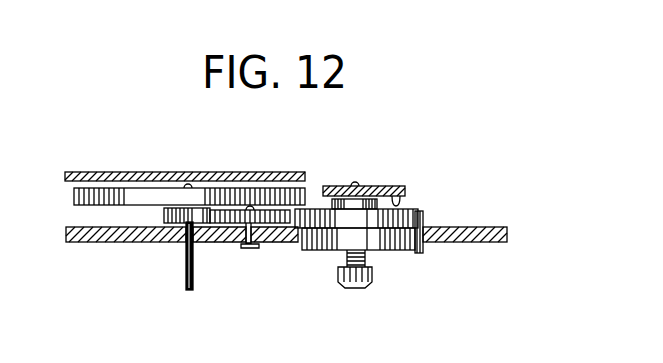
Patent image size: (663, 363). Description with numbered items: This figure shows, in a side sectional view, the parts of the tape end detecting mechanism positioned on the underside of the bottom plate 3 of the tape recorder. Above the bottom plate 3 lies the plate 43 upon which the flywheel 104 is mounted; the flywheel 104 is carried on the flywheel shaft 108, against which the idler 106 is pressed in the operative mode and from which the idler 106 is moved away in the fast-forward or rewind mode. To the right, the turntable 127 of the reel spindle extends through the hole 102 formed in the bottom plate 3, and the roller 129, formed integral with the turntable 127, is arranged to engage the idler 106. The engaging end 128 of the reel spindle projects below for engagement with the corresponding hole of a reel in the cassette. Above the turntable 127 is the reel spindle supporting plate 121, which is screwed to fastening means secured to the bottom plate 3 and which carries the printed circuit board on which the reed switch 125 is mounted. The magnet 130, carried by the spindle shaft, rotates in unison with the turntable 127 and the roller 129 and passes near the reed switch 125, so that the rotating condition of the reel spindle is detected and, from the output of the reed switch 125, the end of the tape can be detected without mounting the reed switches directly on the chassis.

The bottom plate 3 is at (508, 233).
The plate 43 is at (226, 172).
The hole 102 is at (418, 242).
The flywheel 104 is at (288, 192).
The idler 106 is at (274, 226).
The flywheel shaft 108 is at (183, 210).
The reel spindle supporting plate 121 is at (400, 186).
The reed switch 125 is at (402, 201).
The turntable 127 is at (388, 242).
The engaging end 128 is at (340, 282).
The roller 129 is at (420, 218).
The magnet 130 is at (365, 203).